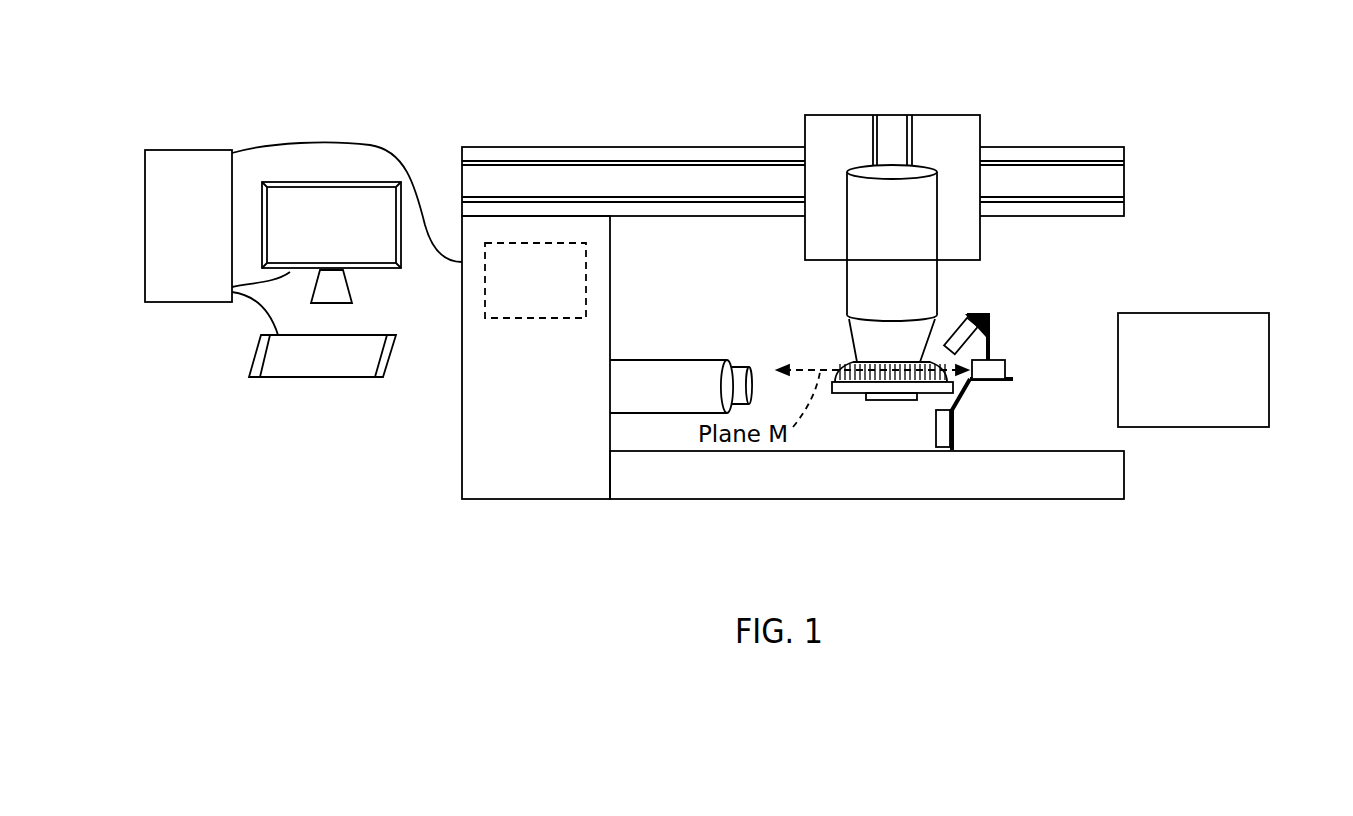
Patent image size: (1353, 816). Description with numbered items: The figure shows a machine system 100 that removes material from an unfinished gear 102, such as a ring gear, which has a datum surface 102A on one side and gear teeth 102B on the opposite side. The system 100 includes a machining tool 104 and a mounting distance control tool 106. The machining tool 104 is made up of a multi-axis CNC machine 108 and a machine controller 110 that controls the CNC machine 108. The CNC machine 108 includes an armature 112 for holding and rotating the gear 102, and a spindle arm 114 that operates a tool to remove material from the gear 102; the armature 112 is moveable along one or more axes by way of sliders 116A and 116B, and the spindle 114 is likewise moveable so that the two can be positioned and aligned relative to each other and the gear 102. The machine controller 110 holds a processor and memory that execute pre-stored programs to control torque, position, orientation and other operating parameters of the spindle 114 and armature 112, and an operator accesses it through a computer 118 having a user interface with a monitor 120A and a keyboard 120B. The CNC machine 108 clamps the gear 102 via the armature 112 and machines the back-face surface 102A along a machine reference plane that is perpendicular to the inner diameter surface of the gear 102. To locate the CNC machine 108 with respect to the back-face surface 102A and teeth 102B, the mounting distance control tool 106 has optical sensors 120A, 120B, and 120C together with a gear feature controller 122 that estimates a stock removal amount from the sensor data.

The machine system 100 is at (1216, 50).
The gear 102 is at (852, 439).
The datum surface 102A is at (845, 397).
The gear teeth 102B is at (850, 363).
The machining tool 104 is at (525, 128).
The mounting distance control tool 106 is at (1270, 302).
The multi-axis computer numerical control machine 108 is at (1059, 140).
The machine controller 110 is at (497, 318).
The armature 112 is at (847, 302).
The spindle arm 114 is at (645, 360).
The slider 116A is at (644, 147).
The slider 116B is at (830, 115).
The computer 118 is at (182, 150).
The monitor 120A is at (403, 258).
The keyboard 120B is at (310, 377).
The optical sensor 120C is at (1005, 367).
The gear feature controller 122 is at (1195, 427).